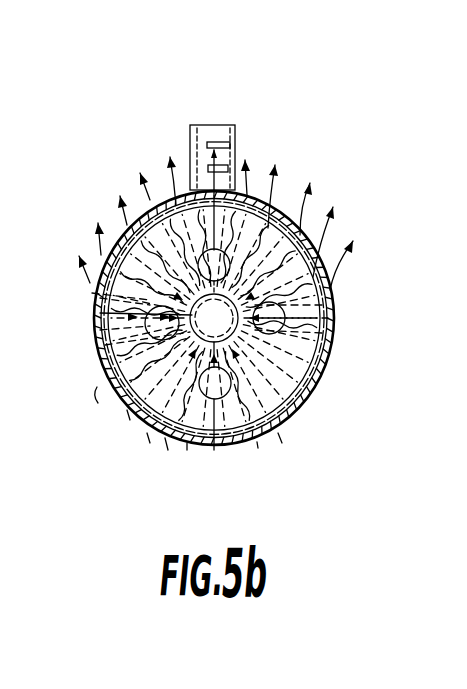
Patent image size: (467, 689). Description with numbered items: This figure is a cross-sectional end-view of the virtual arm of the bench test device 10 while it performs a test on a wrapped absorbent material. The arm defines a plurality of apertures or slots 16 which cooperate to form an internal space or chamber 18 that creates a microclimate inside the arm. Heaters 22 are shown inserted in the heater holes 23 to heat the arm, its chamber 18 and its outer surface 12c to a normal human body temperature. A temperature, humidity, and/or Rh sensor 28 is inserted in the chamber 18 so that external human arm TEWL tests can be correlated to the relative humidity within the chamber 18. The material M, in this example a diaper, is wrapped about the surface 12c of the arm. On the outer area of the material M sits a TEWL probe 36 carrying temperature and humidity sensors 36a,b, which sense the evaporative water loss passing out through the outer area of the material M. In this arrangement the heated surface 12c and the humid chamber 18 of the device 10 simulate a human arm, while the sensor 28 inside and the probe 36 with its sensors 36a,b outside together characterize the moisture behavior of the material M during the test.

The bench test device 10 is at (143, 132).
The surface of the arm 12c is at (320, 222).
The apertures or slots 16 is at (305, 330).
The internal space or chamber 18 is at (102, 340).
The heaters 22 is at (92, 293).
The heater hole 23 is at (100, 313).
The temperature, humidity, and/or Rh sensor 28 is at (220, 313).
The TEWL probe 36 is at (238, 132).
The temperature and humidity sensors 36a,b is at (227, 165).
The material M is at (202, 448).